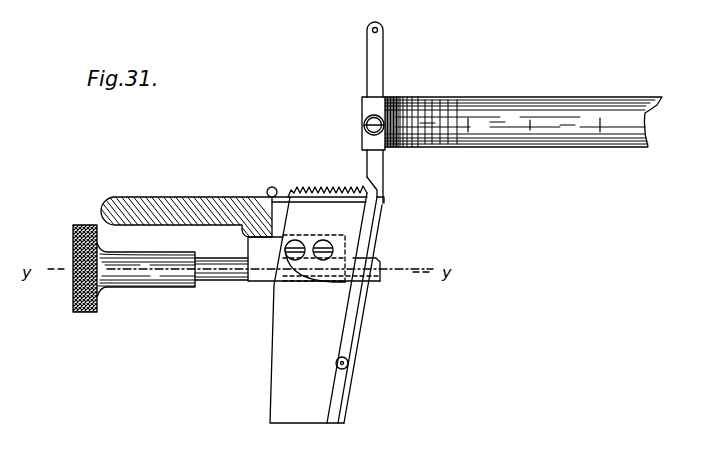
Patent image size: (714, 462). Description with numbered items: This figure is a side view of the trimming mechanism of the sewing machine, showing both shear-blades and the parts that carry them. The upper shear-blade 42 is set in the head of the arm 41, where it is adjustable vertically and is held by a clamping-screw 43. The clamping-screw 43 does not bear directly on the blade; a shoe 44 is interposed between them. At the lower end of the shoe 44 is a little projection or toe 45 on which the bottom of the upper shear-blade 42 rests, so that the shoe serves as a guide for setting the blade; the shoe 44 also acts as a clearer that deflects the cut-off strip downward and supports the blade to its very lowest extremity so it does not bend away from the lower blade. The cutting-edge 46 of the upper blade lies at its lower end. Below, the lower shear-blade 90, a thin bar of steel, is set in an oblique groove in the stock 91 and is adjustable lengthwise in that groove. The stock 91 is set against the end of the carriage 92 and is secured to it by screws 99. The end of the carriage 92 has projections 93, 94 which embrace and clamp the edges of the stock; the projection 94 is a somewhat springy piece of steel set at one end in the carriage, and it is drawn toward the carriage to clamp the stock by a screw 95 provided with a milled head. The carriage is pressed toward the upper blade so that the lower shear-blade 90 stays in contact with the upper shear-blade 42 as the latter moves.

The arm 41 is at (464, 95).
The upper shear-blade 42 is at (380, 65).
The clamping-screw 43 is at (364, 126).
The shoe 44 is at (384, 170).
The toe 45 is at (360, 188).
The cutting-edge 46 is at (369, 171).
The lower shear-blade 90 is at (375, 231).
The stock 91 is at (318, 308).
The carriage 92 is at (262, 282).
The projection 93 is at (314, 259).
The projection 94 is at (380, 272).
The screw 95 is at (160, 287).
The screws 99 is at (322, 241).